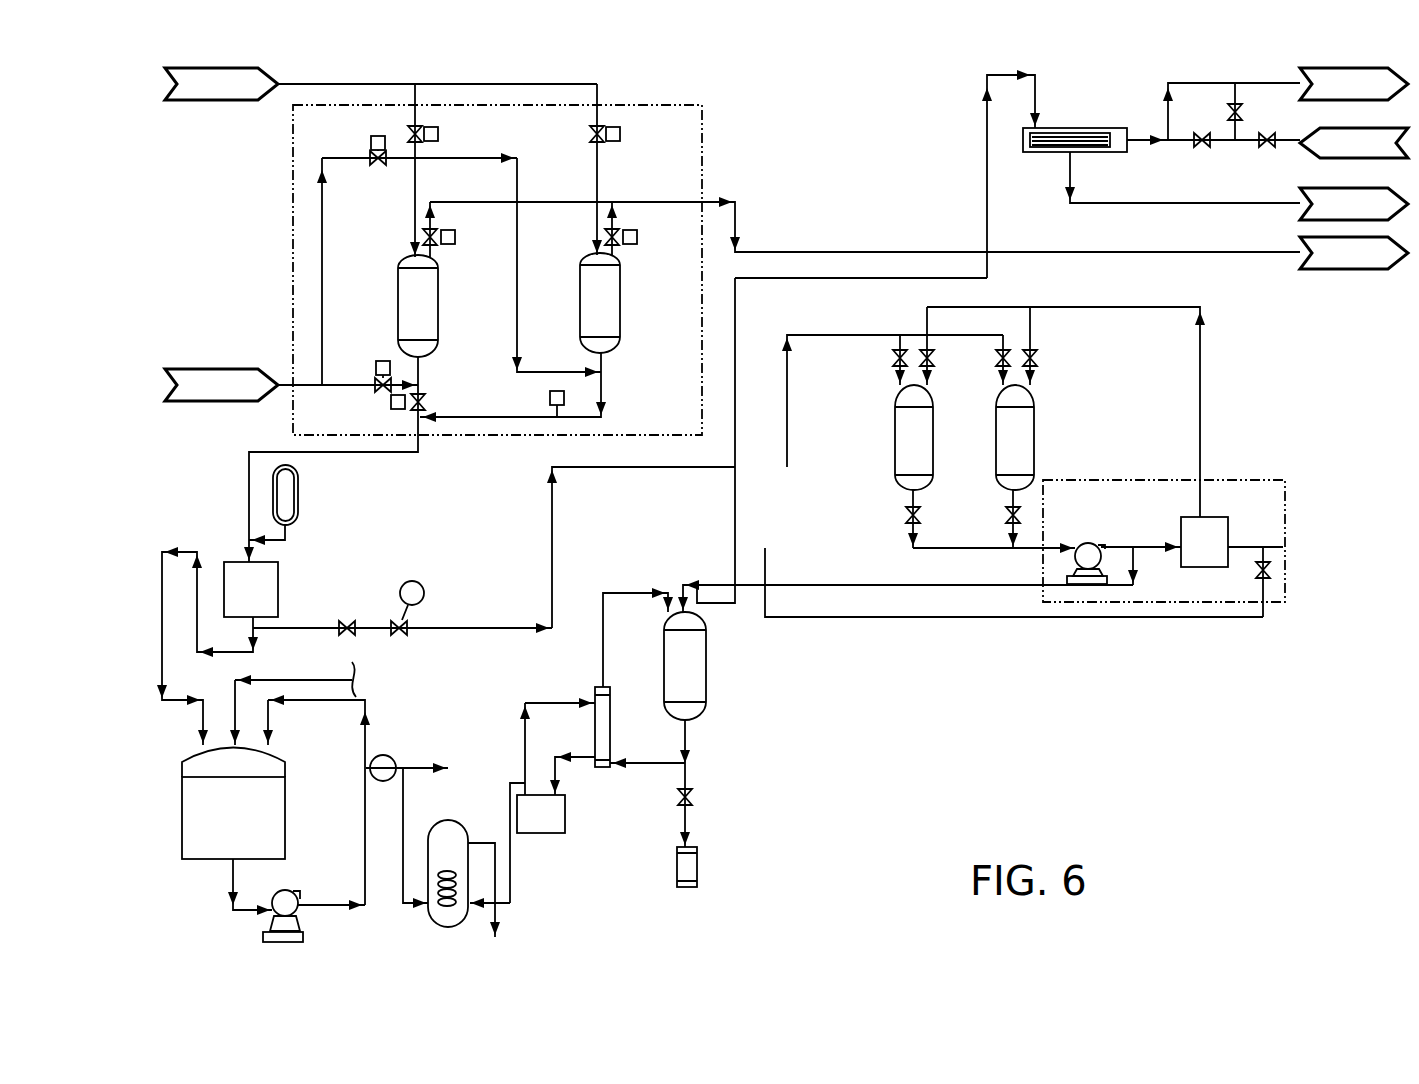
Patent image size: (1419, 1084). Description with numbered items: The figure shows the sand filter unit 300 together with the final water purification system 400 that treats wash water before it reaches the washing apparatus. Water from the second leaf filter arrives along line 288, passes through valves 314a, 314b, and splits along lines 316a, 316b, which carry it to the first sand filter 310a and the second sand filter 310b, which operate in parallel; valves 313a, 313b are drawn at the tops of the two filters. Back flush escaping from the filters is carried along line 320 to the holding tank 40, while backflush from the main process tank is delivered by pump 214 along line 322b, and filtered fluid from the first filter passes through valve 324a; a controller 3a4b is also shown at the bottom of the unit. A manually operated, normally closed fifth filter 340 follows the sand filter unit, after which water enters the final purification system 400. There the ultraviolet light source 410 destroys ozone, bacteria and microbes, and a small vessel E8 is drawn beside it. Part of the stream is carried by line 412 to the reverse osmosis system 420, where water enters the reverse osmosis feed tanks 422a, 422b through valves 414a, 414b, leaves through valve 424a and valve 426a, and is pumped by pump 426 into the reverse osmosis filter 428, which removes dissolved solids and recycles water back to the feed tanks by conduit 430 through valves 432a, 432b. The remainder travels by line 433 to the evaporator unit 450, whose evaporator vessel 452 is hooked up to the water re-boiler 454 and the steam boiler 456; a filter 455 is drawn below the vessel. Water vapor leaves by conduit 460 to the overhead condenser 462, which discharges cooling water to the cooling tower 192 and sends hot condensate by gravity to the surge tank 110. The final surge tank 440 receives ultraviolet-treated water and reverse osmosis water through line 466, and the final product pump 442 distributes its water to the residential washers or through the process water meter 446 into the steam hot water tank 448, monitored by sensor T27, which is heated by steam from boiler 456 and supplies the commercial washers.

The line 288 is at (458, 84).
The sand filter unit 300 is at (709, 124).
The valve 314a is at (436, 131).
The valve 314b is at (591, 134).
The line 316a is at (413, 214).
The line 316b is at (556, 262).
The vent valve 313a is at (438, 250).
The vent valve 313b is at (620, 250).
The first sand filter 310a is at (397, 307).
The second sand filter 310b is at (580, 305).
The valve 324a is at (424, 394).
The line 322b is at (348, 389).
The valve controller 3a4b is at (550, 398).
The line 320 is at (818, 252).
The conduit 460 is at (985, 156).
The overhead condenser 462 is at (1062, 128).
The cooling tower 192 is at (1279, 106).
The pump 214 is at (786, 242).
The surge tank 110 is at (1236, 186).
The holding tank 40 is at (1354, 253).
The reverse osmosis system 420 is at (775, 453).
The conduit 430 is at (1062, 307).
The valve 414a is at (897, 362).
The valve 414b is at (1006, 352).
The valve 432a is at (929, 368).
The valve 432b is at (1040, 358).
The reverse osmosis feed tank 422a is at (895, 445).
The reverse osmosis feed tank 422b is at (996, 445).
The valve 424a is at (905, 516).
The valve 426a is at (1005, 516).
The pump 426 is at (1090, 543).
The reverse osmosis filter 428 is at (1224, 517).
The line 433 is at (922, 585).
The line 466 is at (935, 617).
The fifth filter 340 is at (449, 482).
The final water purification system 400 is at (1131, 743).
The evaporator unit 450 is at (616, 900).
The ultraviolet light source 410 is at (282, 580).
The line 412 is at (420, 624).
The vessel E8 is at (292, 505).
The final surge storage tank 440 is at (287, 815).
The final product pump 442 is at (292, 893).
The process water meter 446 is at (384, 754).
The steam hot water tank 448 is at (444, 821).
The temperature sensor T27 is at (408, 922).
The evaporator vessel 452 is at (663, 688).
The water re-boiler 454 is at (635, 757).
The filter 455 is at (677, 870).
The steam boiler 456 is at (541, 835).